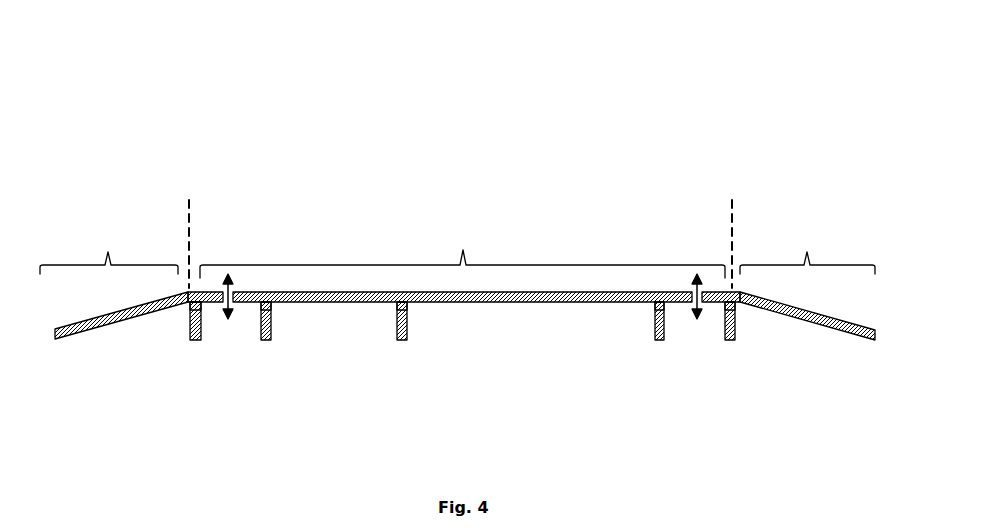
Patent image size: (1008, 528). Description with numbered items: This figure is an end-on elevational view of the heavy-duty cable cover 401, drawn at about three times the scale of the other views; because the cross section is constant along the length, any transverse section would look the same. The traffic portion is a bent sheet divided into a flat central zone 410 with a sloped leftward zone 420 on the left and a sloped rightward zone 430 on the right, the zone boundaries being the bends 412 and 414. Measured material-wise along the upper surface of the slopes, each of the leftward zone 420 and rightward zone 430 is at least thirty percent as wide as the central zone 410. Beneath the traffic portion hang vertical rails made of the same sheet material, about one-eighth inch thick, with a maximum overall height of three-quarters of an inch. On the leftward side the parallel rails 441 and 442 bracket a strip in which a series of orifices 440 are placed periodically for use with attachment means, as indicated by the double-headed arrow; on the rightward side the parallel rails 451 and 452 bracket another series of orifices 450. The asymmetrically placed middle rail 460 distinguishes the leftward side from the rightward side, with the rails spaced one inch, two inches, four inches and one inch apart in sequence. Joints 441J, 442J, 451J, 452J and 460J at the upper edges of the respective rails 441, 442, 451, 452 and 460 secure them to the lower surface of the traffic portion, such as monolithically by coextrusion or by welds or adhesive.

The heavy-duty cable cover 401 is at (553, 280).
The central zone 410 is at (462, 243).
The bend 412 is at (190, 195).
The bend 414 is at (733, 195).
The leftward zone 420 is at (108, 243).
The rightward zone 430 is at (807, 243).
The orifices 440 is at (227, 330).
The orifices 450 is at (696, 330).
The rail 441 is at (188, 330).
The joint 441J is at (188, 305).
The rail 442 is at (272, 328).
The joint 442J is at (272, 305).
The rail 451 is at (736, 330).
The joint 451J is at (736, 305).
The rail 452 is at (653, 328).
The joint 452J is at (653, 305).
The middle rail 460 is at (408, 328).
The joint 460J is at (408, 305).